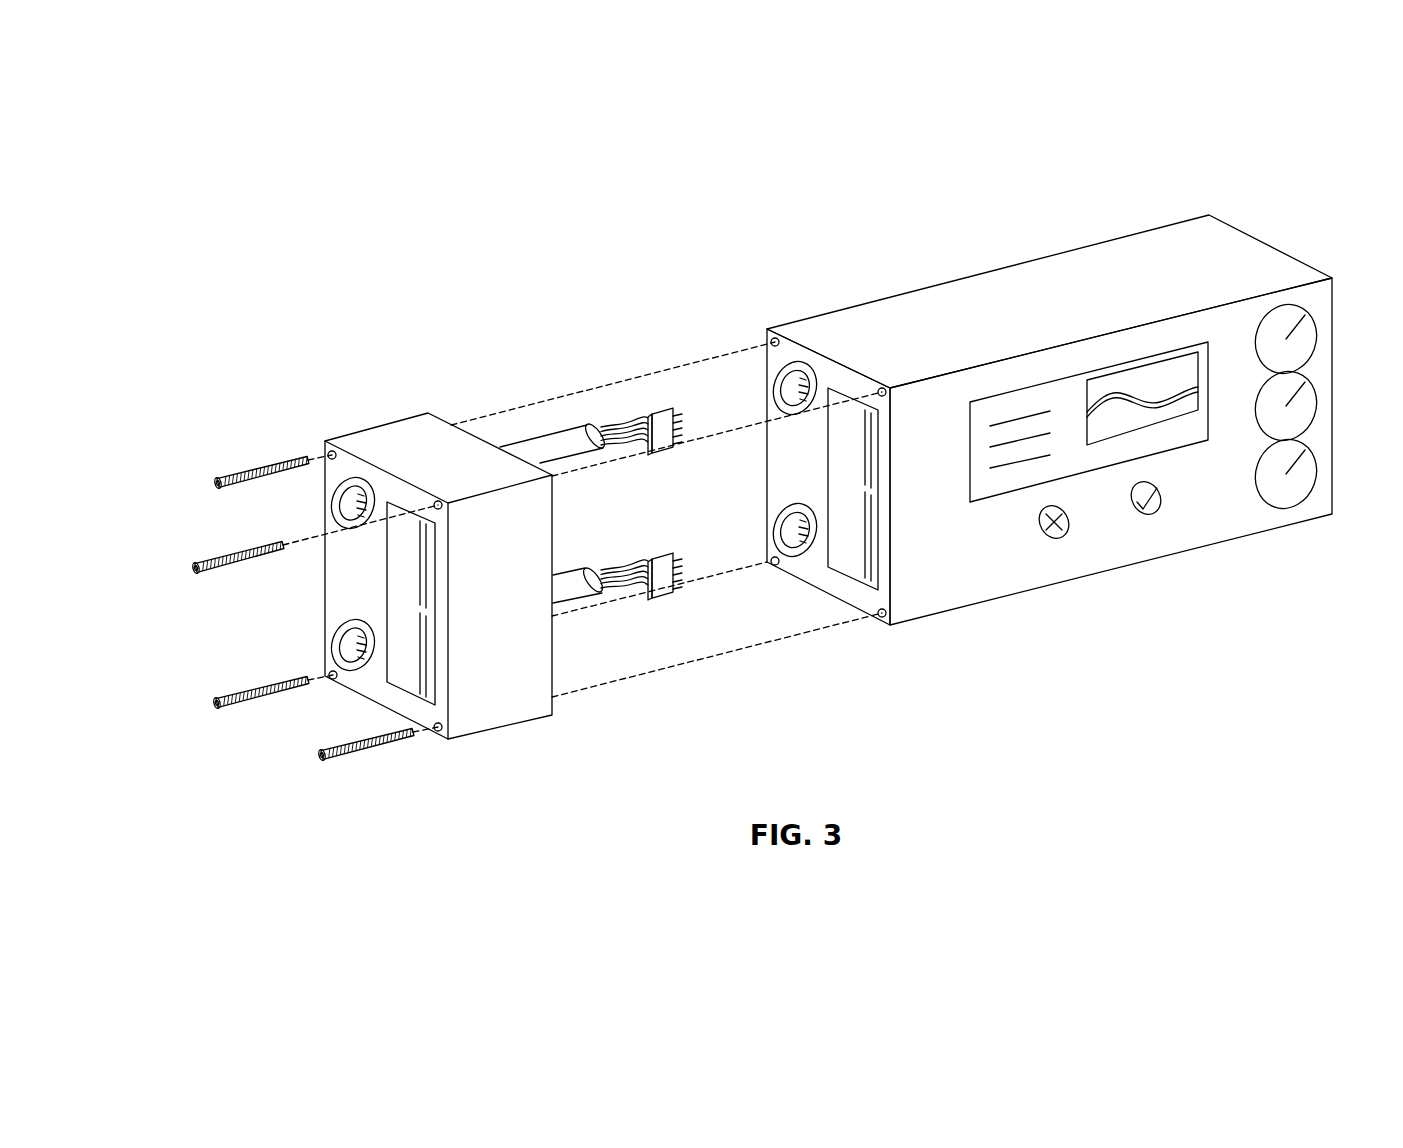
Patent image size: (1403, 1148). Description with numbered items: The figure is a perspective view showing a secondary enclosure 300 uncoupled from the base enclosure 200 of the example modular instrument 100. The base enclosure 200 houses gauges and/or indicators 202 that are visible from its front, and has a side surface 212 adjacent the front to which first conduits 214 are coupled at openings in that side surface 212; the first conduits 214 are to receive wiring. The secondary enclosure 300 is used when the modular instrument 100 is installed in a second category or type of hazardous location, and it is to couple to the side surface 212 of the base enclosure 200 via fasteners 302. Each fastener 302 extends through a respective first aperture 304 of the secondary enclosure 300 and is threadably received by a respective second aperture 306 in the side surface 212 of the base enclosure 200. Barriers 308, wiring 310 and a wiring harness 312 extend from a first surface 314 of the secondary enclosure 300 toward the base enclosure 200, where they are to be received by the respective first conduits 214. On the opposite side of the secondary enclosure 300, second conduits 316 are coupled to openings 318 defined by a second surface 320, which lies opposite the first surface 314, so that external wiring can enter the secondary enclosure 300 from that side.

The modular instrument 100 is at (508, 175).
The base enclosure 200 is at (1270, 245).
The gauges and/or indicators 202 is at (1276, 557).
The side surface 212 is at (840, 588).
The first conduits 214 is at (790, 362).
The secondary enclosure 300 is at (377, 426).
The fasteners 302 is at (260, 687).
The first aperture 304 is at (332, 673).
The second aperture 306 is at (771, 561).
The barriers 308 is at (577, 463).
The wiring 310 is at (645, 427).
The wiring harness 312 is at (673, 408).
The first surface 314 is at (557, 667).
The second conduits 316 is at (331, 494).
The openings 318 is at (353, 490).
The second surface 320 is at (388, 693).